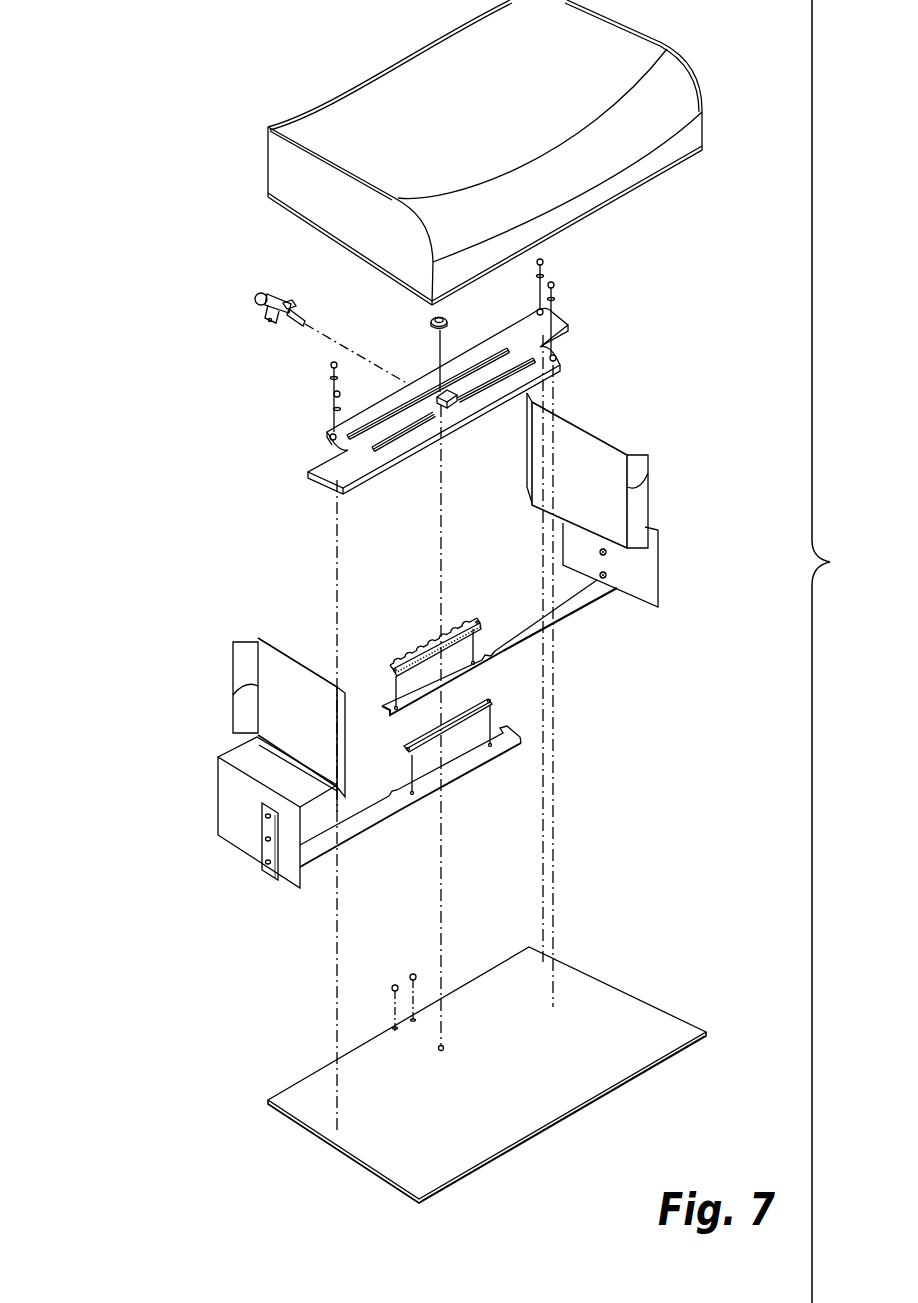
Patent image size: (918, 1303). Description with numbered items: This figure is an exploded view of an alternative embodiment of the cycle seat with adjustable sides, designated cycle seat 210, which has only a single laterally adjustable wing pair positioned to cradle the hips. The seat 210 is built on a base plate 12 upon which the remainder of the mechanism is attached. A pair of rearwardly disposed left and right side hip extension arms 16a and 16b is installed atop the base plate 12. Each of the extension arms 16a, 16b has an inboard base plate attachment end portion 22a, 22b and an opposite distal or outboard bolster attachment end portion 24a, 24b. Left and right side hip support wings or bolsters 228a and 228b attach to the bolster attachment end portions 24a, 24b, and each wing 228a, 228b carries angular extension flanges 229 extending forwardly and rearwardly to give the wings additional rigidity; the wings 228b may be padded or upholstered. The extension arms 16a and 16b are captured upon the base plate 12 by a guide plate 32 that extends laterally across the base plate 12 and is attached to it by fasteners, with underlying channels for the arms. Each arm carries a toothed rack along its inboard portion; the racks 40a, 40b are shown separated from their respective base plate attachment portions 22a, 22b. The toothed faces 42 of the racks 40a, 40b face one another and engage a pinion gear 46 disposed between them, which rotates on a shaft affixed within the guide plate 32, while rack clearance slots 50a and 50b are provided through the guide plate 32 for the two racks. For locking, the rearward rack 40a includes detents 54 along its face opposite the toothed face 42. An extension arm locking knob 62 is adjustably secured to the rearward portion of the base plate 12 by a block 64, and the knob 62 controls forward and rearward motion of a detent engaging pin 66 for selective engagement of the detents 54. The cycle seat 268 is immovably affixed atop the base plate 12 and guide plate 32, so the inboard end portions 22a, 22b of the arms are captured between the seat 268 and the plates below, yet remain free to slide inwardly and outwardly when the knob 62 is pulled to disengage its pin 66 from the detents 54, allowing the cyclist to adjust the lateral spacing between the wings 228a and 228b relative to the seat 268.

The base plate 12 is at (313, 1070).
The left side hip extension arm 16a is at (583, 612).
The right side hip extension arm 16b is at (360, 837).
The base plate attachment end portion 22a is at (388, 695).
The base plate attachment end portion 22b is at (452, 787).
The bolster attachment end portion 24a is at (615, 590).
The bolster attachment end portion 24b is at (263, 860).
The guide plate 32 is at (568, 326).
The rack 40a is at (472, 622).
The rack 40b is at (493, 703).
The toothed face 42 is at (478, 648).
The pinion gear 46 is at (430, 322).
The rack clearance slot 50a is at (378, 420).
The rack clearance slot 50b is at (470, 393).
The detents 54 is at (460, 622).
The extension arm locking knob 62 is at (260, 295).
The block 64 is at (262, 320).
The detent engaging pin 66 is at (290, 316).
The cycle seat 210 is at (150, 988).
The left side hip support wing 228a is at (648, 474).
The right side hip support wing 228b is at (258, 687).
The angular extension flanges 229 is at (640, 453).
The cycle seat 268 is at (516, 100).